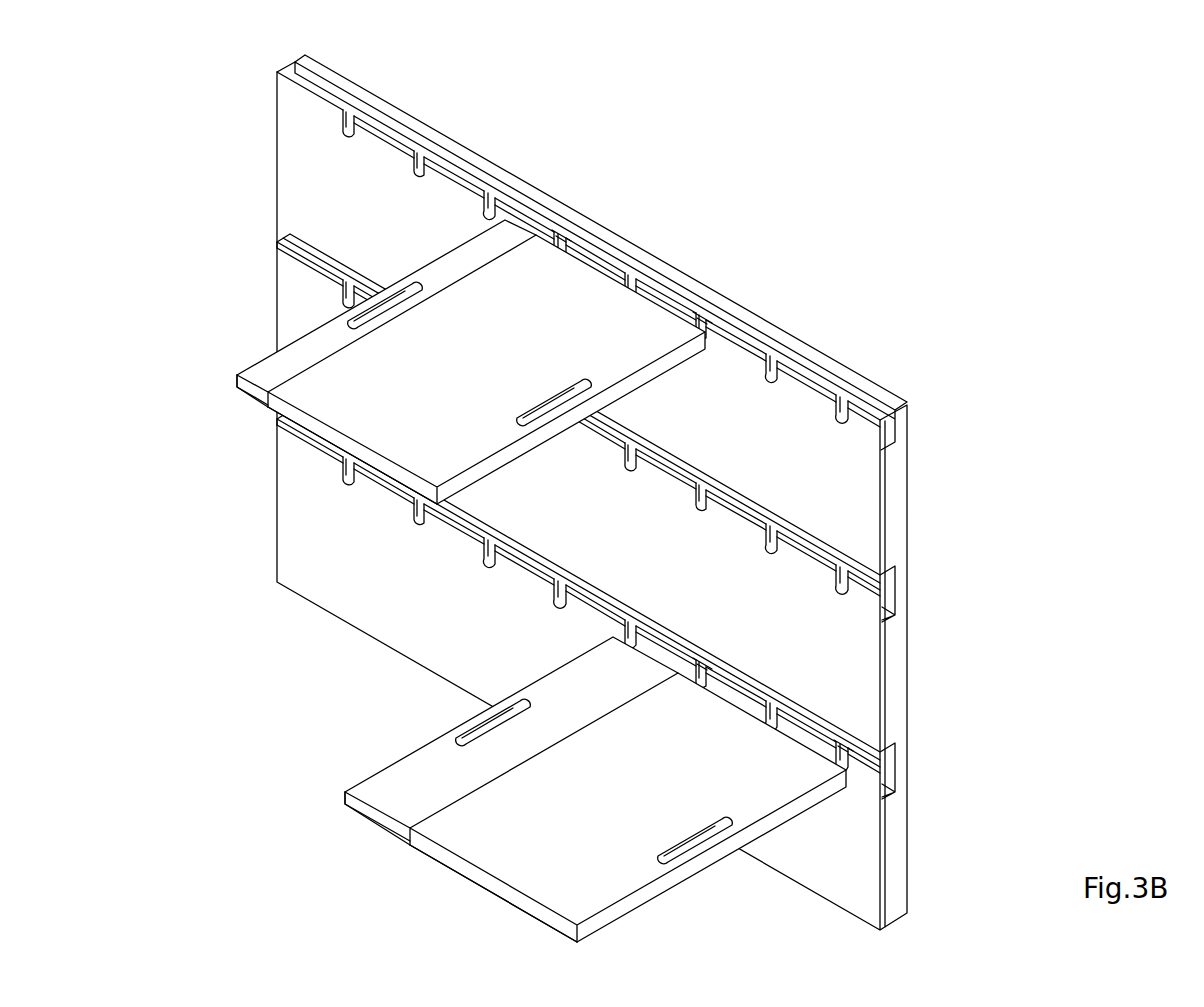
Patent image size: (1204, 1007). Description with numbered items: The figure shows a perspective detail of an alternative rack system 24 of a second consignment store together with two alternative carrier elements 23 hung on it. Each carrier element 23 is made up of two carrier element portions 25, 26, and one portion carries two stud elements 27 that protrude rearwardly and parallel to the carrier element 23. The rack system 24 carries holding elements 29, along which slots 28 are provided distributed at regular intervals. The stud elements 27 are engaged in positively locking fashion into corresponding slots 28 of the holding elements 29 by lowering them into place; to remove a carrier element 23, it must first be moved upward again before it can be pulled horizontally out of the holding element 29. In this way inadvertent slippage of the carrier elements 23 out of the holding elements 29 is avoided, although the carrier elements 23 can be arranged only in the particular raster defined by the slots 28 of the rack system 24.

The carrier element 23 is at (448, 380).
The rack system 24 is at (895, 497).
The carrier element portion 25 is at (334, 402).
The carrier element portion 26 is at (274, 374).
The stud element 27 is at (557, 232).
The slot 28 is at (556, 241).
The holding element 29 is at (868, 411).